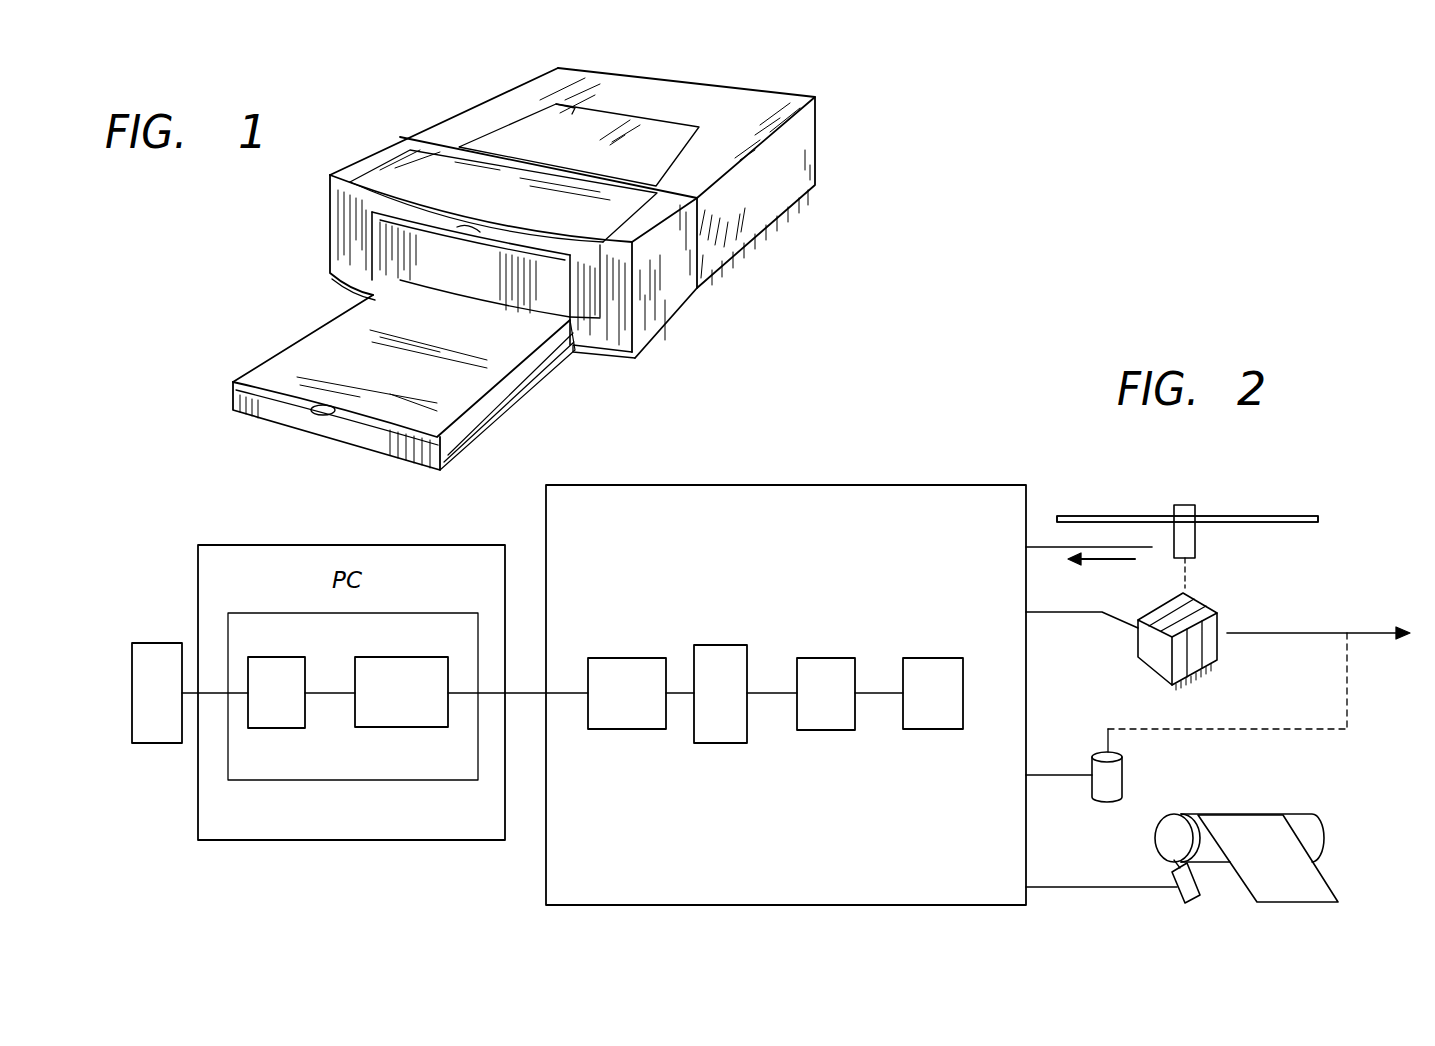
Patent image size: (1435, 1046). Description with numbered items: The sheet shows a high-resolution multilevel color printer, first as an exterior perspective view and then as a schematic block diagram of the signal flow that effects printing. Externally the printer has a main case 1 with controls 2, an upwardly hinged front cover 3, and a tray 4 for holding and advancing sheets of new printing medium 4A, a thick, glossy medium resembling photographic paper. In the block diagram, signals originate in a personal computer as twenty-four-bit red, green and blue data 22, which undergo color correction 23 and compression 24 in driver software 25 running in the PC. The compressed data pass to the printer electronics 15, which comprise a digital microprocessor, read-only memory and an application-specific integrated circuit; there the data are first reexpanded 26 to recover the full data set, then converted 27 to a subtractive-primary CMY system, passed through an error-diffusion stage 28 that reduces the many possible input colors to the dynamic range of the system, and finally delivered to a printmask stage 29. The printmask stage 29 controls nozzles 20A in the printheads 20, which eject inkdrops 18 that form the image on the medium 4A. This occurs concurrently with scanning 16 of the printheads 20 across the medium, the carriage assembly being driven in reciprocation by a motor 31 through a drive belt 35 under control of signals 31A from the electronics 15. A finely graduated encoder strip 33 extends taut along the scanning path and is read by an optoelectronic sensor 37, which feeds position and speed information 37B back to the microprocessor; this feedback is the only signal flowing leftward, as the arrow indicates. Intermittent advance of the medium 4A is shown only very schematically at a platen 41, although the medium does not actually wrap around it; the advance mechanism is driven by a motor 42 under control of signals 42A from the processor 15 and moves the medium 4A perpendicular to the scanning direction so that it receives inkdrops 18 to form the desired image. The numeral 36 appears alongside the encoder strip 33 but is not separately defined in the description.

In FIG. 1, the main case 1 is at (498, 100).
In FIG. 1, the controls 2 is at (330, 263).
In FIG. 1, the front cover 3 is at (360, 215).
In FIG. 1, the tray 4 is at (230, 398).
In FIG. 1, the printing medium 4A is at (335, 350).
In FIG. 2, the printing medium 4A is at (1330, 888).
In FIG. 2, the electronic system 15 is at (546, 530).
In FIG. 2, the scanning 16 is at (1375, 633).
In FIG. 2, the inkdrops 18 is at (1220, 663).
In FIG. 2, the pen bodies 20 is at (1162, 653).
In FIG. 2, the nozzles 20A is at (1080, 612).
In FIG. 2, the twenty-four-bit red, green and blue data 22 is at (170, 643).
In FIG. 2, the color correction 23 is at (292, 728).
In FIG. 2, the compression 24 is at (437, 727).
In FIG. 2, the driver software 25 is at (397, 780).
In FIG. 2, the reexpansion 26 is at (645, 729).
In FIG. 2, the conversion 27 is at (724, 743).
In FIG. 2, the error-diffusion stage 28 is at (831, 730).
In FIG. 2, the printmask stage 29 is at (941, 729).
In FIG. 2, the motor 31 is at (1115, 778).
In FIG. 2, the signals 31A is at (1047, 775).
In FIG. 2, the encoder strip 33 is at (1285, 517).
In FIG. 2, the drive belt 35 is at (1123, 729).
In FIG. 2, the carriage drive belt 36 is at (1285, 517).
In FIG. 2, the optoelectronic sensor 37 is at (1187, 505).
In FIG. 2, the position and speed information 37B is at (1152, 547).
In FIG. 2, the platen 41 is at (1322, 835).
In FIG. 2, the motor 42 is at (1195, 902).
In FIG. 2, the signals 42A is at (1142, 887).